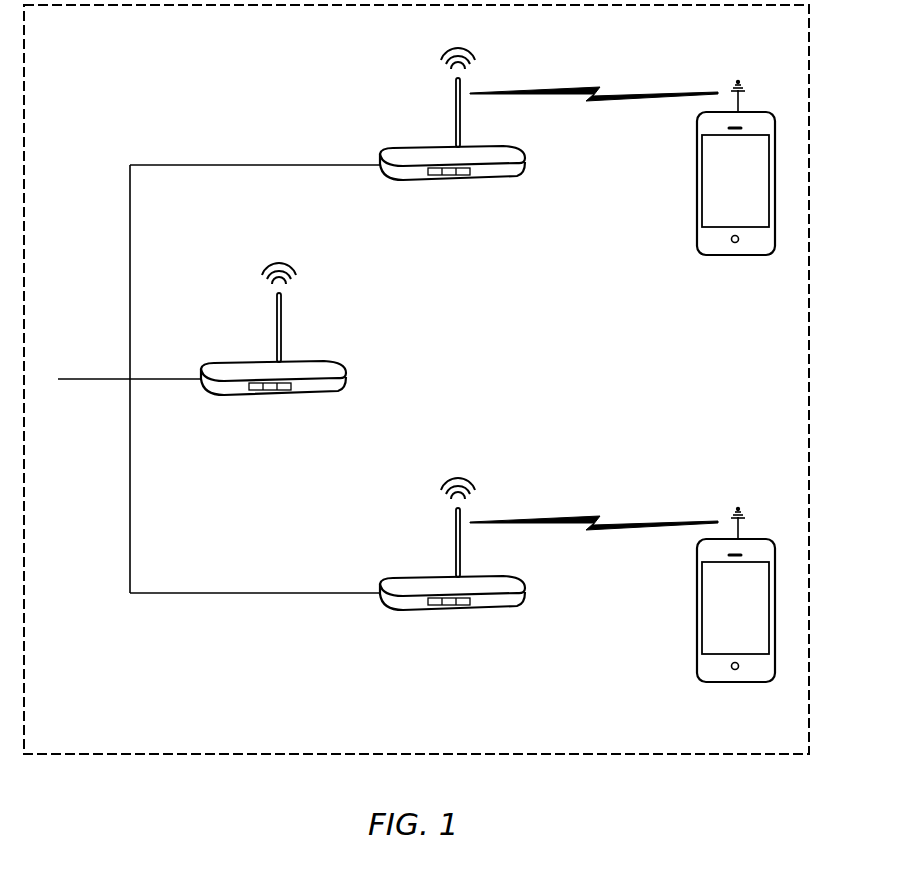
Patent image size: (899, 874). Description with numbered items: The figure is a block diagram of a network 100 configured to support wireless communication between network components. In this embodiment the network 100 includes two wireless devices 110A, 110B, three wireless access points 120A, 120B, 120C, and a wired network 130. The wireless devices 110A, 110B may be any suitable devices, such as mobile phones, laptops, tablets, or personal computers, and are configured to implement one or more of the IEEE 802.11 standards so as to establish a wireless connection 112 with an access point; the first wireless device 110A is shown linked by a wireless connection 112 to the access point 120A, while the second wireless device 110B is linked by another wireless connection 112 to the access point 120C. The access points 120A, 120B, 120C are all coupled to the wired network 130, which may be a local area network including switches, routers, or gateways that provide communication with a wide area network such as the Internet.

The network 100 is at (161, 34).
The wireless device 110A is at (735, 255).
The wireless device 110B is at (735, 682).
The wireless connection 112 is at (591, 88).
The wireless access point 120A is at (462, 183).
The wireless access point 120B is at (283, 398).
The wireless access point 120C is at (462, 612).
The wired network 130 is at (236, 592).